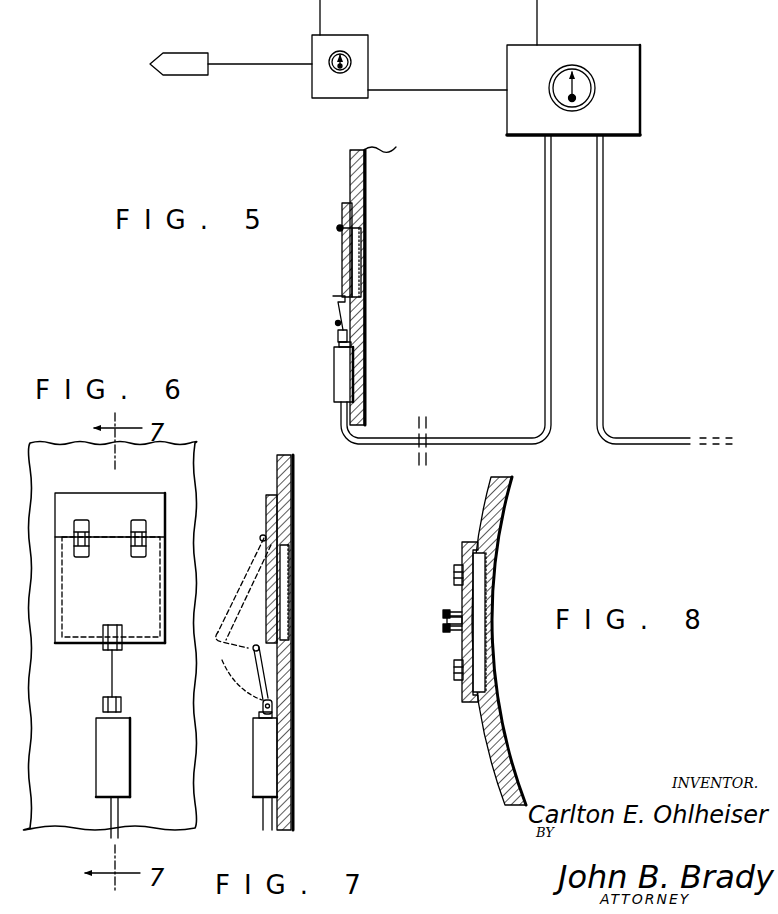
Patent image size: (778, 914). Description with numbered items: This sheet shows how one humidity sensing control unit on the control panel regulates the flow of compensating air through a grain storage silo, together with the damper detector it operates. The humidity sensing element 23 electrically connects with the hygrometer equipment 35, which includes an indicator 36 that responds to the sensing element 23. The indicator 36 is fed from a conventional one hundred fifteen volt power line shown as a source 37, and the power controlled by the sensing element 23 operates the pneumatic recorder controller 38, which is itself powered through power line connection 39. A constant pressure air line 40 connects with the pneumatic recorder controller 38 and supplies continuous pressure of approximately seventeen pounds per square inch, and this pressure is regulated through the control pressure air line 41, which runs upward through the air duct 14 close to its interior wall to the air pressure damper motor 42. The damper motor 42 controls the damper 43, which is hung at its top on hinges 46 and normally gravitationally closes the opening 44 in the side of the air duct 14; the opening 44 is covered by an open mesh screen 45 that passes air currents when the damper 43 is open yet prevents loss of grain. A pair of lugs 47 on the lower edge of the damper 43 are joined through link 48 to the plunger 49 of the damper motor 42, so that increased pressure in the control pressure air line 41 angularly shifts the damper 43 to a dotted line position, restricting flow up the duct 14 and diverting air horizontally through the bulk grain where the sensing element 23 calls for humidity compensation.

In FIG. 5, the air duct 14 is at (366, 201).
In FIG. 6, the air duct 14 is at (185, 806).
In FIG. 7, the air duct 14 is at (296, 806).
In FIG. 8, the air duct 14 is at (503, 730).
In FIG. 5, the humidity sensing element 23 is at (188, 77).
In FIG. 5, the hygrometer equipment 35 is at (484, 108).
In FIG. 5, the indicator 36 is at (312, 86).
In FIG. 5, the source 37 is at (318, 22).
In FIG. 5, the pneumatic recorder controller 38 is at (626, 106).
In FIG. 5, the power line connection 39 is at (540, 28).
In FIG. 5, the constant pressure air line 40 is at (604, 178).
In FIG. 5, the control pressure air line 41 is at (545, 306).
In FIG. 6, the control pressure air line 41 is at (110, 812).
In FIG. 7, the control pressure air line 41 is at (267, 812).
In FIG. 5, the air pressure damper motor 42 is at (341, 386).
In FIG. 6, the air pressure damper motor 42 is at (118, 781).
In FIG. 7, the air pressure damper motor 42 is at (270, 762).
In FIG. 5, the damper 43 is at (342, 266).
In FIG. 6, the damper 43 is at (78, 633).
In FIG. 7, the damper 43 is at (266, 581).
In FIG. 8, the damper 43 is at (462, 642).
In FIG. 5, the opening 44 is at (363, 251).
In FIG. 6, the opening 44 is at (160, 604).
In FIG. 7, the opening 44 is at (287, 600).
In FIG. 8, the opening 44 is at (488, 597).
In FIG. 5, the open mesh screen 45 is at (363, 281).
In FIG. 7, the open mesh screen 45 is at (294, 627).
In FIG. 8, the open mesh screen 45 is at (487, 643).
In FIG. 5, the hinges 46 is at (337, 229).
In FIG. 6, the hinges 46 is at (131, 532).
In FIG. 7, the hinges 46 is at (261, 536).
In FIG. 8, the hinges 46 is at (455, 572).
In FIG. 5, the lugs 47 is at (333, 299).
In FIG. 6, the lugs 47 is at (104, 656).
In FIG. 7, the lugs 47 is at (259, 662).
In FIG. 8, the lugs 47 is at (447, 611).
In FIG. 5, the link 48 is at (337, 324).
In FIG. 6, the link 48 is at (113, 659).
In FIG. 7, the link 48 is at (262, 704).
In FIG. 8, the link 48 is at (447, 620).
In FIG. 5, the plunger 49 is at (352, 345).
In FIG. 6, the plunger 49 is at (122, 712).
In FIG. 7, the plunger 49 is at (258, 720).